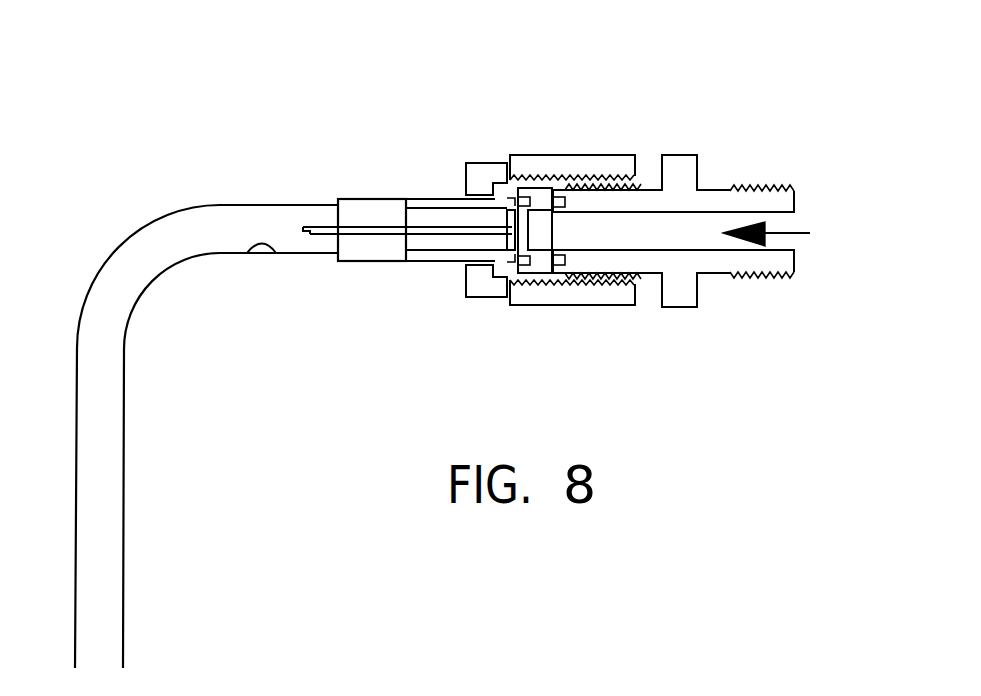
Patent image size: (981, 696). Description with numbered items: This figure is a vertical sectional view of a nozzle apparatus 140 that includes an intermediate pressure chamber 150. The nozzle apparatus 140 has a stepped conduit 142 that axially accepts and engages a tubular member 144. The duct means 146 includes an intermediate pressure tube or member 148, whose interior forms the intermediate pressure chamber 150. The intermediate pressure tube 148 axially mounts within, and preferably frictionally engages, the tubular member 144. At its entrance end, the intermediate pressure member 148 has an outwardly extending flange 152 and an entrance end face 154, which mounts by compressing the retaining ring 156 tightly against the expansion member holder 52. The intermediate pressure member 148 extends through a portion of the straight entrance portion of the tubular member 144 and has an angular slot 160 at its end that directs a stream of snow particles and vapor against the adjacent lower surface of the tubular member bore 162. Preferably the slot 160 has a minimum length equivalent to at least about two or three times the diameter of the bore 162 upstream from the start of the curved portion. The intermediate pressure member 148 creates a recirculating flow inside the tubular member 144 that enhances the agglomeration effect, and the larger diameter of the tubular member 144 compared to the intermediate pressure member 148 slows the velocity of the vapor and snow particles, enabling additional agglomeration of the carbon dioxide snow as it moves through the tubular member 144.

The nozzle apparatus 140 is at (543, 92).
The stepped conduit 142 is at (422, 204).
The tubular member 144 is at (298, 255).
The duct means 146 is at (276, 205).
The intermediate pressure tube 148 is at (428, 239).
The intermediate pressure chamber 150 is at (375, 228).
The outwardly extending flange 152 is at (513, 276).
The entrance end face 154 is at (517, 187).
The retaining ring 156 is at (322, 205).
The angular slot 160 is at (303, 230).
The tubular member bore 162 is at (249, 254).
The expansion member holder 52 is at (543, 192).